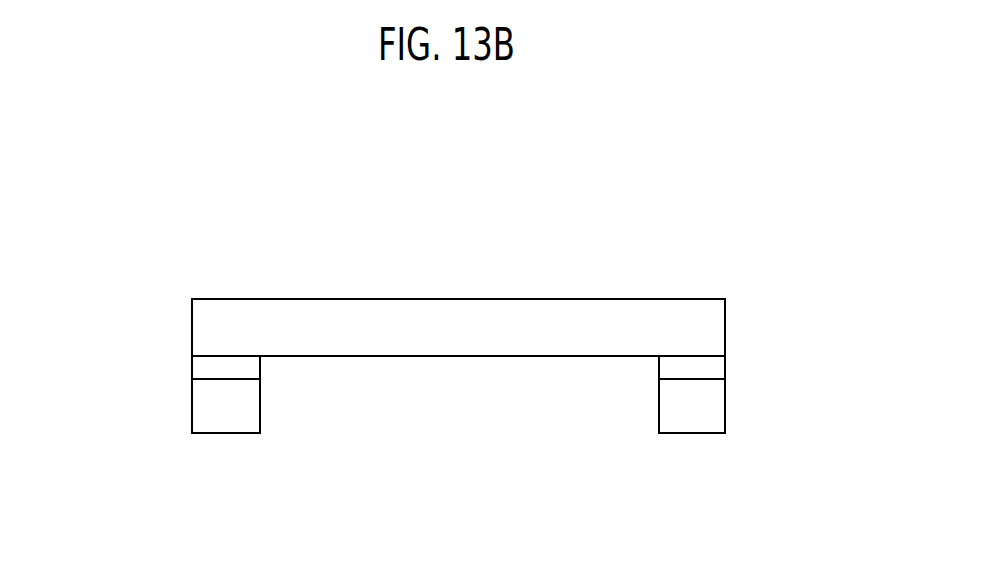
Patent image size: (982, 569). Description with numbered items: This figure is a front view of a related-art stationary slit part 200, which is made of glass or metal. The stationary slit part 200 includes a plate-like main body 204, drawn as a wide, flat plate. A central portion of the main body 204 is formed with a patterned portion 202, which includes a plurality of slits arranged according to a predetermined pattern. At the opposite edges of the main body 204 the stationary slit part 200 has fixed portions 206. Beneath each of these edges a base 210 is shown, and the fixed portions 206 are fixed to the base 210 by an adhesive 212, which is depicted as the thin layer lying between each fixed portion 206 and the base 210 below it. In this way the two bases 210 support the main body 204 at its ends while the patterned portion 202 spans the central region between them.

The stationary slit part 200 is at (287, 260).
The patterned portion 202 is at (433, 290).
The main body 204 is at (480, 298).
The fixed portions 206 is at (219, 298).
The base 210 is at (192, 407).
The adhesive 212 is at (192, 371).